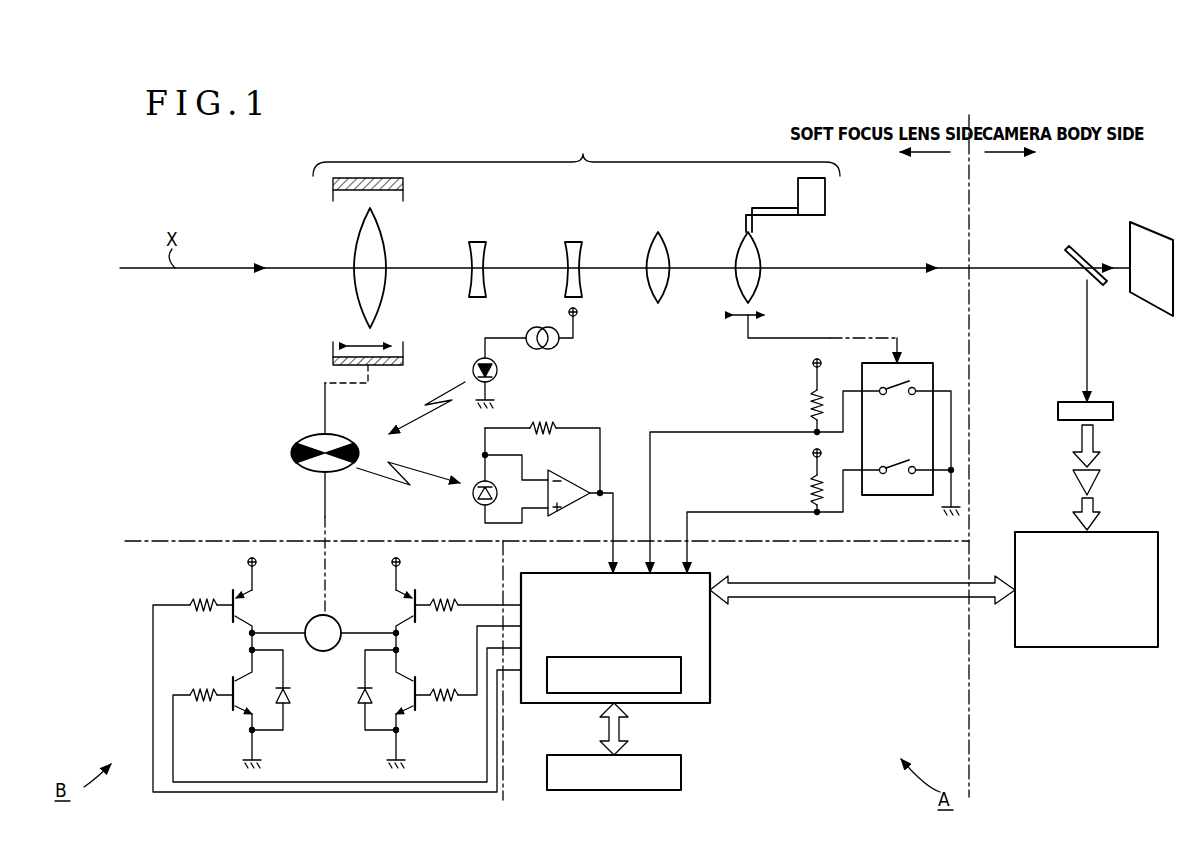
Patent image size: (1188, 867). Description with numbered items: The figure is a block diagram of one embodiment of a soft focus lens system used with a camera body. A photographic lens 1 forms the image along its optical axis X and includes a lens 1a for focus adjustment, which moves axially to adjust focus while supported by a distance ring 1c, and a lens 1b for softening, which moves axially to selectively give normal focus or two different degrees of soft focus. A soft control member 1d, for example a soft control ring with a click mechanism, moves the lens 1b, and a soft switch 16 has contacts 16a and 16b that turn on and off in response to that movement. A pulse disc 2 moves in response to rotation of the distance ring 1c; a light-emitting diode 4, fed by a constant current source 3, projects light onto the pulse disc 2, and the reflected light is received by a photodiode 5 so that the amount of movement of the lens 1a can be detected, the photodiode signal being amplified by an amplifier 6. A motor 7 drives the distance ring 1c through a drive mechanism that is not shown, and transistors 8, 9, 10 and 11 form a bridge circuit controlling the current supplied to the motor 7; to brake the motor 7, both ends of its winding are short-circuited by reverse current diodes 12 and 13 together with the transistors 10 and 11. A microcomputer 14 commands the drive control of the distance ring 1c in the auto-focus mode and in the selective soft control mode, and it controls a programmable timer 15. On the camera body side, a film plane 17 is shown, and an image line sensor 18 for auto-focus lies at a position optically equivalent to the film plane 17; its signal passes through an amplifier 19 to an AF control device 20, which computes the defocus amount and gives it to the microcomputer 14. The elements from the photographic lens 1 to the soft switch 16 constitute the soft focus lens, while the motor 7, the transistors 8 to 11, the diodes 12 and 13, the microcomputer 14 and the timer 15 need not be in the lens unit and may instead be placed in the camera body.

The photographic lens 1 is at (598, 245).
The lens for focus adjustment 1a is at (353, 255).
The lens for softening 1b is at (762, 252).
The distance ring 1c is at (333, 352).
The soft control member 1d is at (827, 205).
The pulse disc 2 is at (306, 438).
The constant current source 3 is at (551, 349).
The light-emitting diode 4 is at (498, 372).
The photodiode 5 is at (475, 498).
The amplifier 6 is at (572, 508).
The motor 7 is at (318, 616).
The transistor 8 is at (232, 593).
The transistor 9 is at (412, 594).
The transistor 10 is at (235, 712).
The transistor 11 is at (418, 710).
The reverse current diode 12 is at (288, 706).
The reverse current diode 13 is at (362, 708).
The microcomputer 14 is at (712, 642).
The programmable timer 15 is at (683, 768).
The soft switch 16 is at (926, 363).
The contact 16a is at (892, 398).
The contact 16b is at (900, 461).
The film plane 17 is at (1130, 236).
The image line sensor 18 is at (1115, 413).
The amplifier 19 is at (1102, 481).
The AF control device 20 is at (1133, 648).